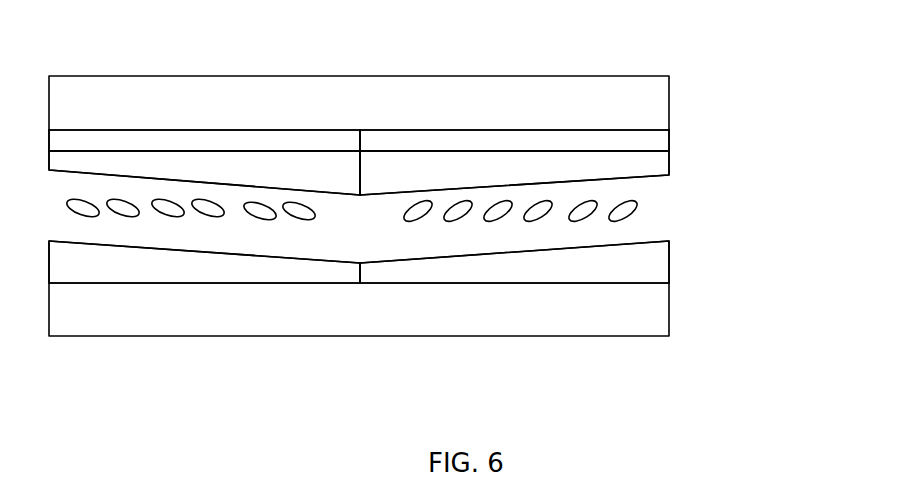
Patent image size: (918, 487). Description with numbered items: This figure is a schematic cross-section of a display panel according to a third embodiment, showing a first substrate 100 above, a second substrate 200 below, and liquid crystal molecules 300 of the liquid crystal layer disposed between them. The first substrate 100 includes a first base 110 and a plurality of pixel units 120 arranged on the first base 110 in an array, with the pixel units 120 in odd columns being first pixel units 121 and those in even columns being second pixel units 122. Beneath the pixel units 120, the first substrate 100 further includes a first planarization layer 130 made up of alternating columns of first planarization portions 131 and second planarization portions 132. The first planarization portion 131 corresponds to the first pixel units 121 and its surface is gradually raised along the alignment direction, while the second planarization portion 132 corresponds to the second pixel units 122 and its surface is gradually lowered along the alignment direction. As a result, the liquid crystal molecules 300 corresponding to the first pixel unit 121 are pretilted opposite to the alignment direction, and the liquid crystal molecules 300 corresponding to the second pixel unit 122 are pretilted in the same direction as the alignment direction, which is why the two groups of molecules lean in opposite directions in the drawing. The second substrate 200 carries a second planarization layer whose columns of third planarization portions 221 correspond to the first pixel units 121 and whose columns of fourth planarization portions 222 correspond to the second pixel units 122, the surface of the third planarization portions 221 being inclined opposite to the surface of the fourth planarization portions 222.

The first substrate 100 is at (453, 106).
The first base 110 is at (653, 98).
The pixel units 120 is at (359, 92).
The first pixel units 121 is at (187, 143).
The second pixel units 122 is at (517, 145).
The first planarization layer 130 is at (410, 106).
The first planarization portions 131 is at (293, 170).
The second planarization portions 132 is at (432, 160).
The second substrate 200 is at (413, 320).
The third planarization portions 221 is at (147, 277).
The fourth planarization portions 222 is at (518, 277).
The liquid crystal molecules 300 is at (628, 213).